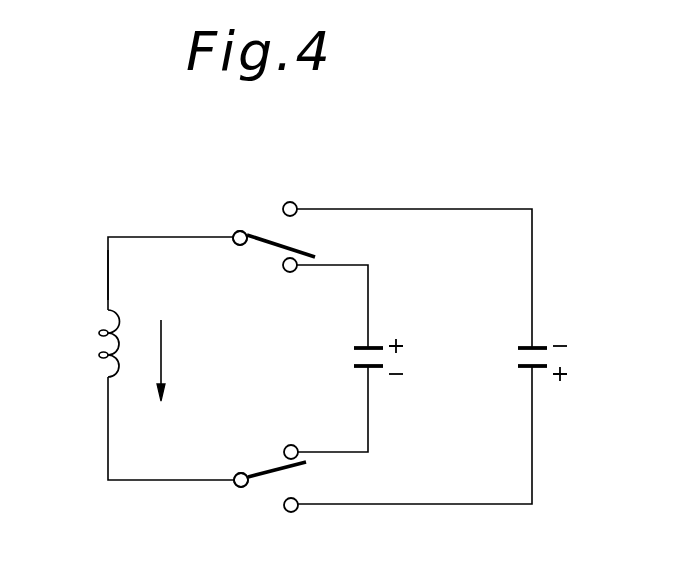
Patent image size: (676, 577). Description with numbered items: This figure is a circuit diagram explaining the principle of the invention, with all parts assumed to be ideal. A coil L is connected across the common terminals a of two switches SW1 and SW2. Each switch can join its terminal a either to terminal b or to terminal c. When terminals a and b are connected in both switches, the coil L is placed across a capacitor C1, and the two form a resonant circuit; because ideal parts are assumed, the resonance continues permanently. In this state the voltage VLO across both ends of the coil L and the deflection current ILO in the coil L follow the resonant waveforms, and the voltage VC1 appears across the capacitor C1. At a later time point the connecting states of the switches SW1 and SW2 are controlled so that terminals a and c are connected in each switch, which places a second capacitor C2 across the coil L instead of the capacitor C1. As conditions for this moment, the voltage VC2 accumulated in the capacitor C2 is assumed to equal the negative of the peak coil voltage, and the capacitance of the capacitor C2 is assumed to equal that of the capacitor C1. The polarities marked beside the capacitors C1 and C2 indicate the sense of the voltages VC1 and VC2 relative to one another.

The coil L is at (89, 343).
The voltage across both ends of the coil VLO is at (69, 270).
The deflection current ILO is at (166, 345).
The switch SW1 is at (265, 232).
The switch SW2 is at (266, 484).
The terminal a is at (237, 246).
The terminal b is at (290, 273).
The terminal c is at (296, 204).
The capacitor C1 is at (342, 349).
The voltage across capacitor C1 VC1 is at (402, 338).
The capacitor C2 is at (512, 349).
The voltage across capacitor C2 VC2 is at (567, 341).